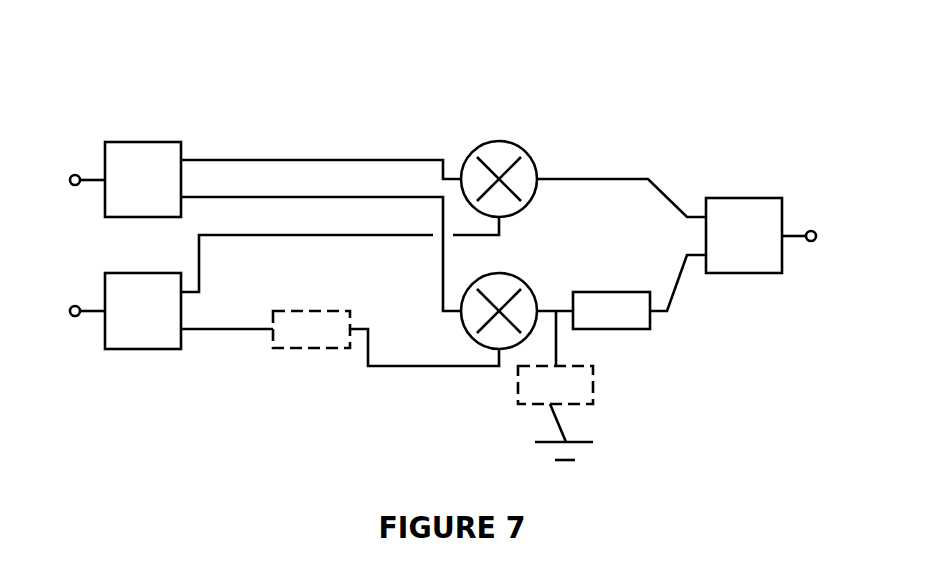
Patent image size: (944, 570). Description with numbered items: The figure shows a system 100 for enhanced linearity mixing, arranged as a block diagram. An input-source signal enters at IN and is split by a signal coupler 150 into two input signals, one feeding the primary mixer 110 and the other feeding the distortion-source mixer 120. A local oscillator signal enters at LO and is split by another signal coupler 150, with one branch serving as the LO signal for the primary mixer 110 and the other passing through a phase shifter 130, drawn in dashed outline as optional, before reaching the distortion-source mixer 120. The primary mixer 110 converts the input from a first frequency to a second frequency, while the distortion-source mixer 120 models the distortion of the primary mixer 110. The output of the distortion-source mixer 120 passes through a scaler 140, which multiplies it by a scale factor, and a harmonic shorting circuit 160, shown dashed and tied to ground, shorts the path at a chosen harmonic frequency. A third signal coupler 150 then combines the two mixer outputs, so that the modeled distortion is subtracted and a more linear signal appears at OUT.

The system for enhanced linearity mixing 100 is at (447, 238).
The primary mixer 110 is at (499, 164).
The distortion-source mixer 120 is at (499, 295).
The phase shifter 130 is at (311, 329).
The scaler 140 is at (611, 310).
The signal coupler 150 is at (443, 245).
The harmonic shorting circuit 160 is at (555, 385).